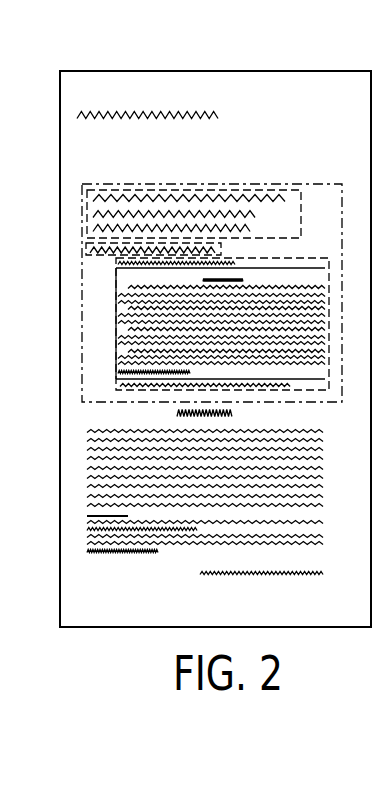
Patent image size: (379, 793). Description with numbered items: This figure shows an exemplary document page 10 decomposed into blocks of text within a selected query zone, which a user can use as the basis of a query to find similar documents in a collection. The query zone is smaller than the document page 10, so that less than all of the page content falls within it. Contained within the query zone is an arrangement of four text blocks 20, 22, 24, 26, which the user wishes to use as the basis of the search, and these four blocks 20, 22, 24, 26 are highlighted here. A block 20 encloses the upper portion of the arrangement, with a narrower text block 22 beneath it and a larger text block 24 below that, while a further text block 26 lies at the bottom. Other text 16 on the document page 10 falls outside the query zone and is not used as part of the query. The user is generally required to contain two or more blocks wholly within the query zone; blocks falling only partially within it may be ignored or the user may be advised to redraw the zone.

The document page 10 is at (92, 80).
The text block 20 is at (143, 191).
The text block 22 is at (84, 249).
The text block 24 is at (118, 333).
The text block 26 is at (116, 379).
The text 16 is at (132, 466).